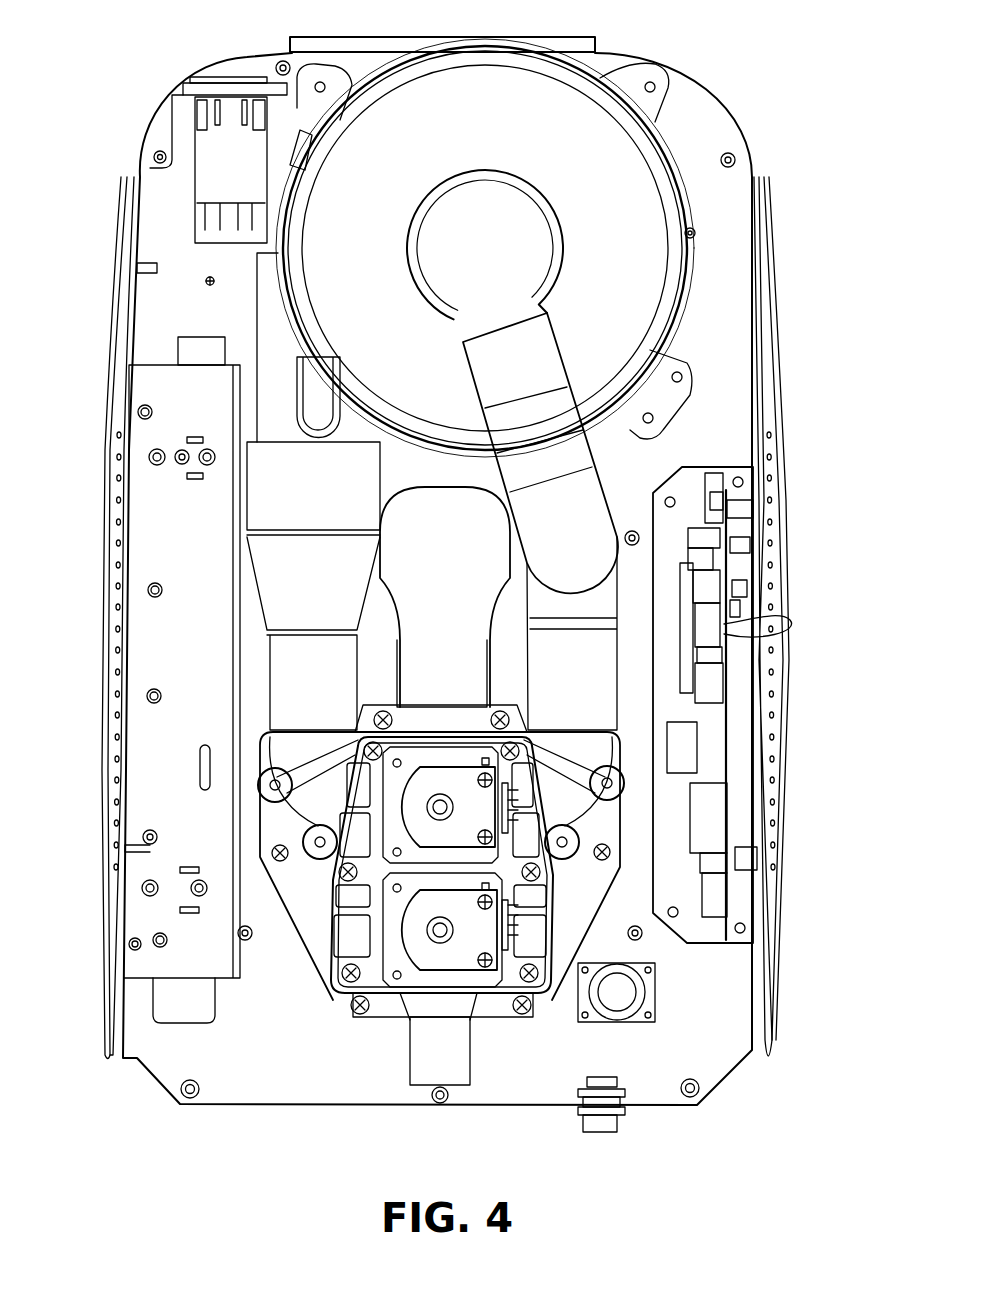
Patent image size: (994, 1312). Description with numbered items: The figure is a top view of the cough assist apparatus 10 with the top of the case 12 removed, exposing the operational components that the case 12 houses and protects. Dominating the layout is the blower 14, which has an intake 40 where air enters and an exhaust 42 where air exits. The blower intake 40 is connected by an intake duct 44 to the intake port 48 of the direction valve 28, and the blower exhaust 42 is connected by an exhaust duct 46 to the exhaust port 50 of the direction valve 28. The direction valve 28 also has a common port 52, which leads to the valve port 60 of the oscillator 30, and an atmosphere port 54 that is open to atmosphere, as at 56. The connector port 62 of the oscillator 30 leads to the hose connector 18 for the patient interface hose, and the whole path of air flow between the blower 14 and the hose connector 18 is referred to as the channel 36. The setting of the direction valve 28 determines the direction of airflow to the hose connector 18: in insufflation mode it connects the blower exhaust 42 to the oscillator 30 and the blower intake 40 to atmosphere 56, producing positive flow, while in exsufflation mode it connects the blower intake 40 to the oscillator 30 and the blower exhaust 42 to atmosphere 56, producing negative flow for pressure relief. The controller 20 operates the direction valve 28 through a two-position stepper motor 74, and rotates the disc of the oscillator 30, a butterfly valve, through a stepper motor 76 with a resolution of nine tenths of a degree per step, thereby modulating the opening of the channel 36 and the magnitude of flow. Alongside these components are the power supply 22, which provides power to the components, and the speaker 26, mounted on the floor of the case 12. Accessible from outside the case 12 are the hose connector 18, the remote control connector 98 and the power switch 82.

The cough assist apparatus 10 is at (812, 166).
The case 12 is at (725, 110).
The blower 14 is at (496, 384).
The hose connector 18 is at (455, 1095).
The controller 20 is at (738, 705).
The power supply 22 is at (140, 740).
The speaker 26 is at (650, 990).
The direction valve 28 is at (447, 856).
The oscillator 30 is at (396, 1005).
The channel 36 is at (616, 488).
The blower intake 40 is at (488, 178).
The blower exhaust 42 is at (296, 554).
The intake duct 44 is at (575, 362).
The exhaust duct 46 is at (258, 587).
The intake port 48 is at (612, 722).
The exhaust port 50 is at (261, 717).
The common port 52 is at (490, 858).
The atmosphere port 54 is at (490, 697).
The atmosphere 56 is at (422, 485).
The valve port 60 is at (395, 873).
The connector port 62 is at (408, 1030).
The two-position stepper motor 74 is at (420, 750).
The stepper motor 76 is at (465, 958).
The power switch 82 is at (243, 72).
The remote control connector 98 is at (600, 1135).